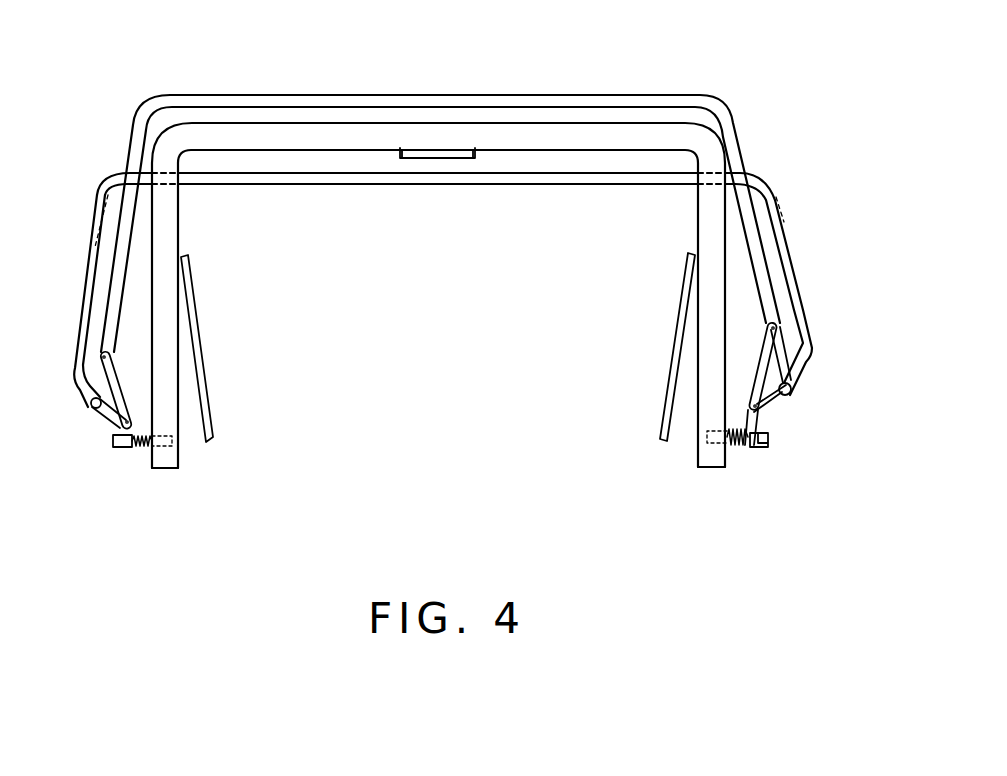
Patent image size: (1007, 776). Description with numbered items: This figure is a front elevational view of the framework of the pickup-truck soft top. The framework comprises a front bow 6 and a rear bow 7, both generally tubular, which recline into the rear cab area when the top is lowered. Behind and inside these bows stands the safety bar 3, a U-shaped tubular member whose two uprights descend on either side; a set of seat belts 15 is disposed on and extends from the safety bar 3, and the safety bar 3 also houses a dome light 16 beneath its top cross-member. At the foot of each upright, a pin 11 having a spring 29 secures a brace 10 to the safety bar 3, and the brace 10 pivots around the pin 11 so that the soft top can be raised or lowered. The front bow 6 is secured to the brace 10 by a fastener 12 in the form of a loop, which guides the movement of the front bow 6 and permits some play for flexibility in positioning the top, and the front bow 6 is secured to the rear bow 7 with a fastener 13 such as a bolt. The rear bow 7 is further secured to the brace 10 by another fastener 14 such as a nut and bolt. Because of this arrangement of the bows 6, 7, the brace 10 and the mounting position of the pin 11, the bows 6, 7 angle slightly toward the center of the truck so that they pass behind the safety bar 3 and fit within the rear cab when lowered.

The safety bar 3 is at (143, 306).
The front bow 6 is at (740, 127).
The rear bow 7 is at (790, 231).
The brace 10 is at (763, 413).
The pin 11 is at (115, 447).
The fastener (loop) 12 is at (778, 322).
The fastener (bolt) 13 is at (792, 383).
The fastener (nut and bolt) 14 is at (757, 423).
The seat belts 15 is at (212, 418).
The dome light 16 is at (463, 157).
The spring 29 is at (141, 448).